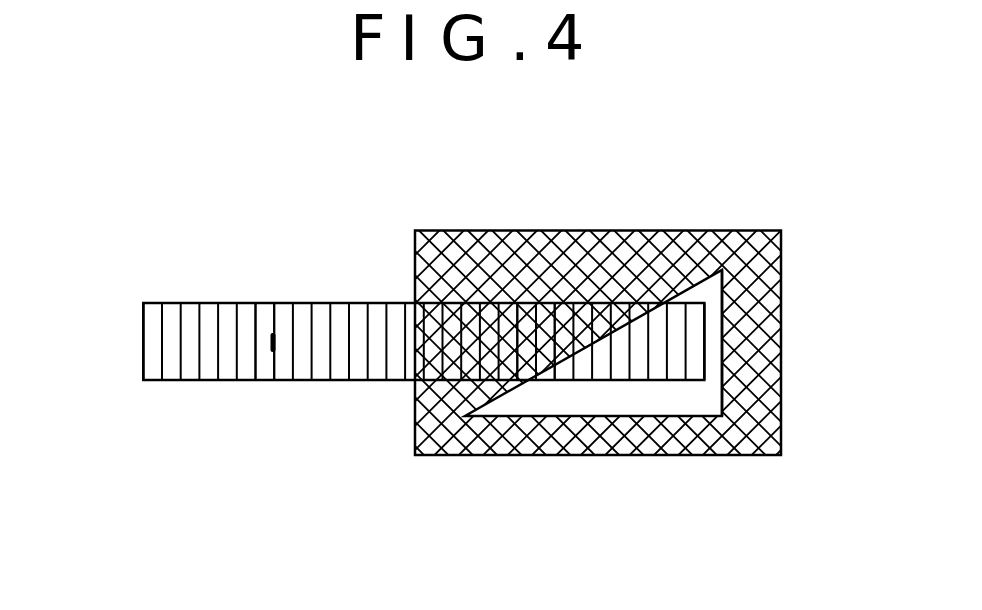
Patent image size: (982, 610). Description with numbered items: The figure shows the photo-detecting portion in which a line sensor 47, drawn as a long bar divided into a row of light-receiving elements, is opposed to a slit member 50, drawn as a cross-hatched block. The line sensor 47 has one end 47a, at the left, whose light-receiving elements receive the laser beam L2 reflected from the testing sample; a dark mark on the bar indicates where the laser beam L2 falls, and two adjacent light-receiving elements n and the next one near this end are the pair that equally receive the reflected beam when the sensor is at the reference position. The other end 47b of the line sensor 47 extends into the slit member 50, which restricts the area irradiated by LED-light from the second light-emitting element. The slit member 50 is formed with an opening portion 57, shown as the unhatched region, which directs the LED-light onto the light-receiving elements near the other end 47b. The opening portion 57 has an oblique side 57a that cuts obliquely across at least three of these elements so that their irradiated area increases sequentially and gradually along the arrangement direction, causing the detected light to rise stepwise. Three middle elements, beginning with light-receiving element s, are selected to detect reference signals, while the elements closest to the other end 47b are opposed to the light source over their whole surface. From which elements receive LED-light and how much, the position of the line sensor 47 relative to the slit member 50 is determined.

The slit member 50 is at (620, 230).
The opening portion 57 is at (688, 416).
The oblique side 57a is at (721, 291).
The line sensor 47 is at (207, 303).
The one end 47a is at (143, 340).
The other end 47b is at (706, 337).
The laser beam L2 is at (273, 334).
The light-receiving element n is at (263, 372).
The light-receiving element s is at (525, 375).